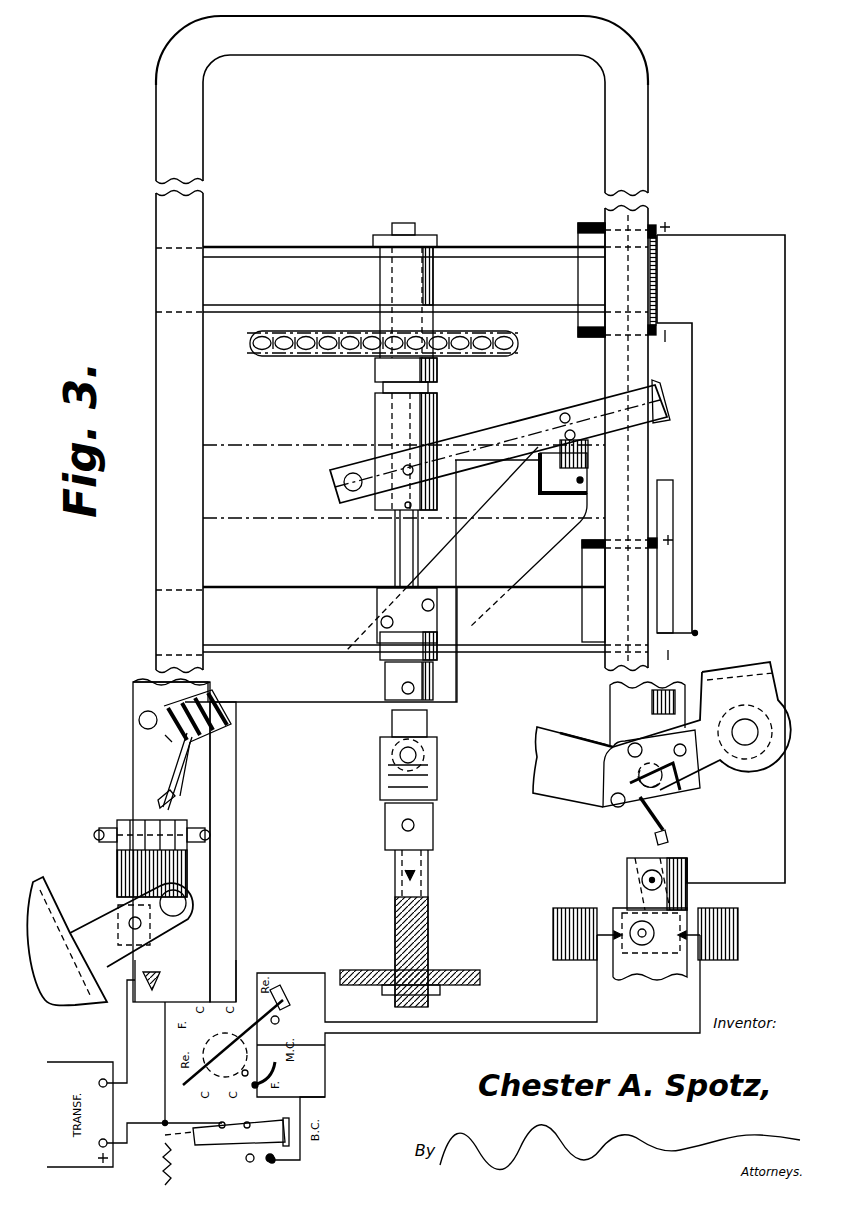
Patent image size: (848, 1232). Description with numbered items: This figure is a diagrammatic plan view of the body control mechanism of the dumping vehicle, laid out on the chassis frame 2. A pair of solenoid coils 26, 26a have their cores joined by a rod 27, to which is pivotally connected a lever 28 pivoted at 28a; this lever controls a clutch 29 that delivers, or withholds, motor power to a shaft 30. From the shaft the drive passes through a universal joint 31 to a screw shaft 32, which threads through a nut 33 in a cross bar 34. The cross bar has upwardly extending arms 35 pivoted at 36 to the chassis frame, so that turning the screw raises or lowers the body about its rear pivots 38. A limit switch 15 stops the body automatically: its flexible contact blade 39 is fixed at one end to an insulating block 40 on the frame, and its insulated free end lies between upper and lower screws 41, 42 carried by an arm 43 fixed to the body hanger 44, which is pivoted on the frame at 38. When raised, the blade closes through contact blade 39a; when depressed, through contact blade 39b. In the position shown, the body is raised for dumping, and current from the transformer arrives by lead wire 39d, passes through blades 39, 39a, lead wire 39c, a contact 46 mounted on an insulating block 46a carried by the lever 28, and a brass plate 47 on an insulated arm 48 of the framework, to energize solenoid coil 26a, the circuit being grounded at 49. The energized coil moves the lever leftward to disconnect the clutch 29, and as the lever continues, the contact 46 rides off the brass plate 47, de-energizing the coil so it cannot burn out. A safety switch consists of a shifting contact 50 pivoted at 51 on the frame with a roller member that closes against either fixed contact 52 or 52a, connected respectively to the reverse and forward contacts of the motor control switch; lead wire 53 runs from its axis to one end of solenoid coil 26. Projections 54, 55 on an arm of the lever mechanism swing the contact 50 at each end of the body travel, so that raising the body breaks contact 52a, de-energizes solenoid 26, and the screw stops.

The frame 2 is at (172, 380).
The limit switch 15 is at (150, 740).
The solenoid coil 26 is at (580, 320).
The solenoid coil 26a is at (592, 578).
The rod 27 is at (628, 350).
The lever 28 is at (520, 427).
The pivot 28a is at (350, 470).
The clutch 29 is at (386, 400).
The shaft 30 is at (407, 553).
The universal joint 31 is at (390, 768).
The screw shaft 32 is at (398, 940).
The nut 33 is at (440, 990).
The cross bar 34 is at (457, 970).
The upwardly extending arms 35 is at (577, 752).
The pivot 36 is at (613, 782).
The rear pivots 38 is at (180, 905).
The contact blade 39 is at (154, 747).
The contact blade 39a is at (158, 795).
The contact blade 39b is at (198, 753).
The lead wire 39c is at (333, 700).
The lead wire 39d is at (240, 885).
The insulating block 40 is at (177, 708).
The upper screw 41 is at (100, 833).
The lower screw 42 is at (198, 843).
The arm 43 is at (155, 825).
The hanger 44 is at (110, 941).
The contact 46 is at (585, 450).
The insulating block 46a is at (572, 445).
The brass plate 47 is at (541, 466).
The insulated arm 48 is at (522, 547).
The ground 49 is at (693, 703).
The shifting contact 50 is at (627, 858).
The pivot 51 is at (623, 803).
The fixed contact 52 is at (592, 905).
The fixed contact 52a is at (683, 975).
The lead wire 53 is at (785, 480).
The projection 54 is at (653, 810).
The projection 55 is at (683, 783).